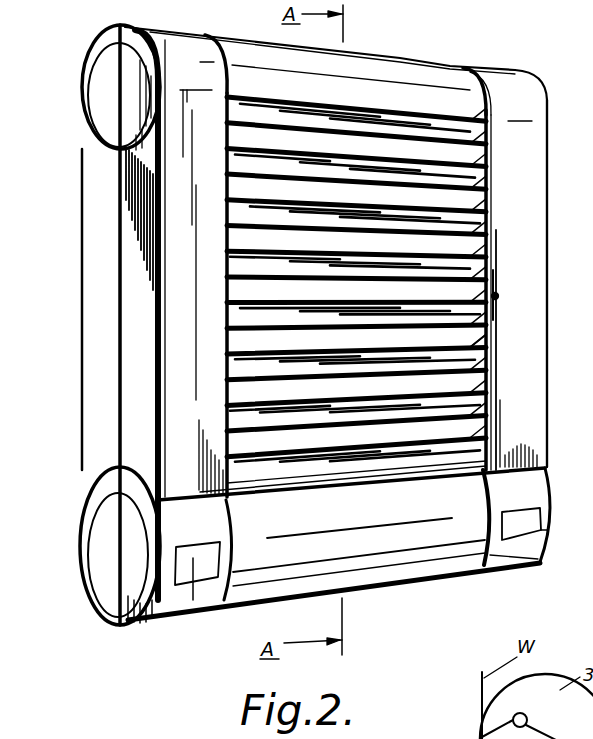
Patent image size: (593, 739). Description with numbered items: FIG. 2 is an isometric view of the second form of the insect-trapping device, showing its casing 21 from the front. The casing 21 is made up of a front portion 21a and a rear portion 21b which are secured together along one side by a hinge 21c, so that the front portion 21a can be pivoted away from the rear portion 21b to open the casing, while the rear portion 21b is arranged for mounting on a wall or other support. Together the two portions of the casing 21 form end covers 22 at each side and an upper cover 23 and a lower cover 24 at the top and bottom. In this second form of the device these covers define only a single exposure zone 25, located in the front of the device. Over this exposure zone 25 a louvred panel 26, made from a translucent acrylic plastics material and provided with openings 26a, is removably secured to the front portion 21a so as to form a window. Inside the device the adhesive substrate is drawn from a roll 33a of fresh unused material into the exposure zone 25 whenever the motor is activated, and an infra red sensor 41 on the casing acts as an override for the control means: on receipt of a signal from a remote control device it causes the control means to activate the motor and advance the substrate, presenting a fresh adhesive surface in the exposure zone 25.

The casing 21 is at (404, 49).
The front portion 21a is at (515, 97).
The rear portion 21b is at (95, 343).
The hinge 21c is at (105, 78).
The end covers 22 is at (513, 215).
The upper cover 23 is at (452, 92).
The lower cover 24 is at (365, 568).
The exposure zone 25 is at (487, 295).
The louvred panel 26 is at (472, 385).
The openings 26a is at (482, 343).
The infra red sensor 41 is at (191, 600).
The roll 33a is at (500, 726).